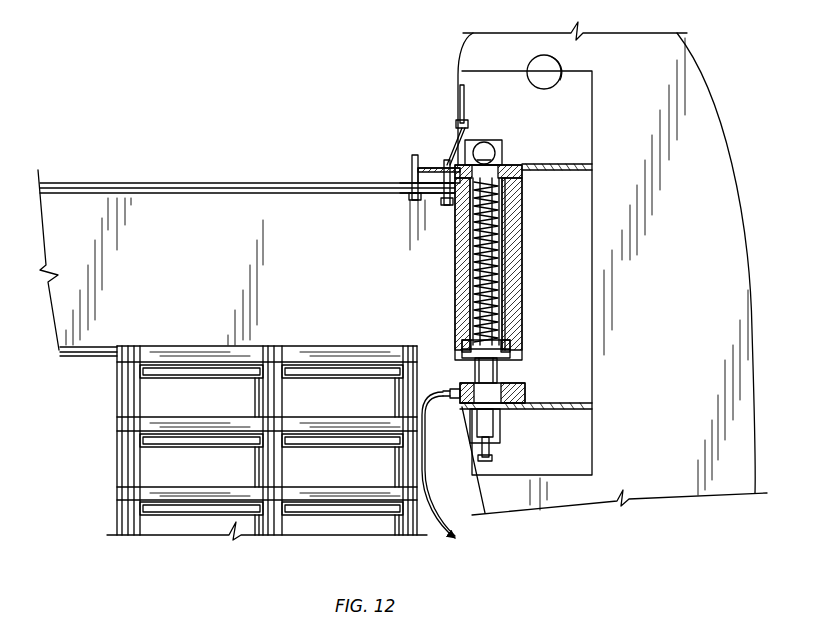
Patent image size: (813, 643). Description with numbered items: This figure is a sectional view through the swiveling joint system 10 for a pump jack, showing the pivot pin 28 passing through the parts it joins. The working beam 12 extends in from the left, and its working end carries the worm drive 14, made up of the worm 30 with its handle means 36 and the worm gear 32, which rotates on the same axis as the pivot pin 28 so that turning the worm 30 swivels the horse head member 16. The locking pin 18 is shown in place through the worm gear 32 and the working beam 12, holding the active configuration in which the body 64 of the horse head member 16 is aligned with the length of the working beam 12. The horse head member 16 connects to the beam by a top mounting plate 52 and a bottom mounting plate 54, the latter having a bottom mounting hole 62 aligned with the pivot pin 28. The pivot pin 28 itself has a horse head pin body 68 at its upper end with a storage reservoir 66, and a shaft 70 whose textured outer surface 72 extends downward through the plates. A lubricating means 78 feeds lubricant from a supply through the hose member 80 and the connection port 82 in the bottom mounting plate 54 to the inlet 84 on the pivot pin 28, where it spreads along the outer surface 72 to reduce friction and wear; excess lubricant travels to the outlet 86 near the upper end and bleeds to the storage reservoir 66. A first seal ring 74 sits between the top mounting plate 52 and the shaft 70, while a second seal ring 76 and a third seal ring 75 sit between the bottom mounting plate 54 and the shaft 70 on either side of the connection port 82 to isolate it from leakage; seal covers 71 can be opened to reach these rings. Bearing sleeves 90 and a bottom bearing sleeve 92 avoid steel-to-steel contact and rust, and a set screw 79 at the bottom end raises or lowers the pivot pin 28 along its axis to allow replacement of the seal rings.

The swiveling joint system 10 is at (160, 170).
The working beam 12 is at (75, 287).
The worm drive 14 is at (412, 167).
The horse head member 16 is at (470, 47).
The locking pin 18 is at (455, 168).
The pivot pin 28 is at (500, 220).
The worm 30 is at (408, 184).
The worm gear 32 is at (440, 176).
The handle means 36 is at (415, 190).
The top mounting plate 52 is at (523, 180).
The bottom mounting plate 54 is at (530, 405).
The bottom mounting hole 62 is at (500, 378).
The body 64 is at (683, 75).
The storage reservoir 66 is at (504, 143).
The horse head pin body 68 is at (485, 142).
The shaft 70 is at (500, 245).
The seal covers 71 is at (510, 350).
The outer surface 72 is at (490, 275).
The first seal ring 74 is at (456, 150).
The third seal ring 75 is at (470, 345).
The second seal ring 76 is at (470, 386).
The lubricating means 78 is at (443, 389).
The set screw 79 is at (490, 452).
The hose member 80 is at (470, 540).
The connection port 82 is at (530, 391).
The inlet 84 is at (512, 303).
The outlet 86 is at (515, 172).
The bearing sleeves 90 is at (500, 196).
The bottom bearing sleeve 92 is at (500, 440).